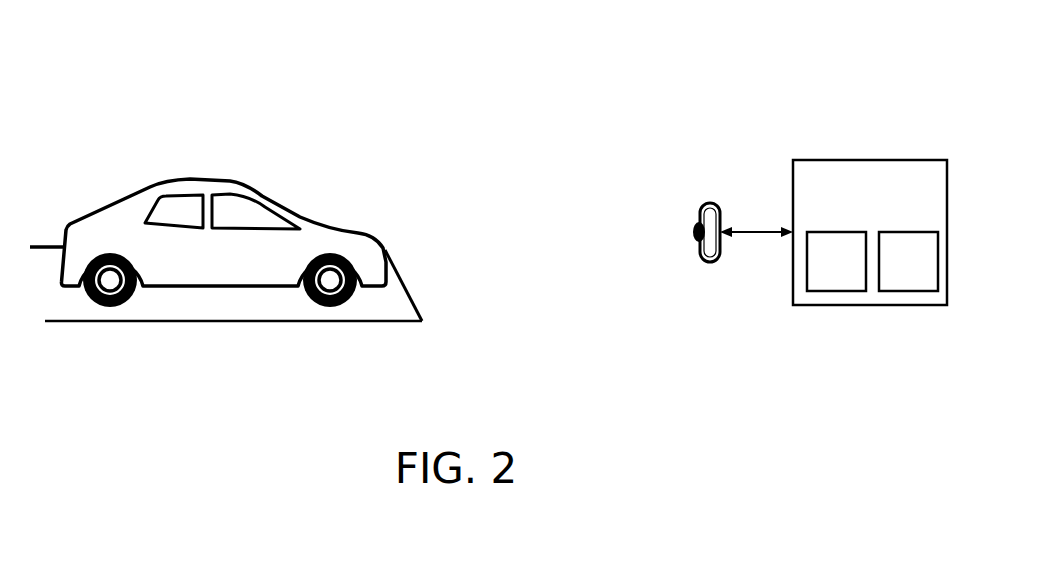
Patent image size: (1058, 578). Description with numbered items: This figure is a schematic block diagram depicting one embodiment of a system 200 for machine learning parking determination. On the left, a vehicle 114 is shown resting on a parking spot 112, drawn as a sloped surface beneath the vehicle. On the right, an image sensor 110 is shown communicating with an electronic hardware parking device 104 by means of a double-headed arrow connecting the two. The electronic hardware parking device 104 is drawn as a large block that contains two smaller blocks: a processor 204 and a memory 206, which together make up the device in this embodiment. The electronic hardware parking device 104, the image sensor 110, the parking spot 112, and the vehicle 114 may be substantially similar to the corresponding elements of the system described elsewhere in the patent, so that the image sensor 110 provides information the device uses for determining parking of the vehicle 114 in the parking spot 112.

The system for machine learning parking determination 200 is at (169, 39).
The vehicle 114 is at (155, 193).
The parking spot 112 is at (402, 312).
The image sensor 110 is at (708, 203).
The electronic hardware parking device 104 is at (853, 215).
The processor 204 is at (818, 272).
The memory 206 is at (889, 272).